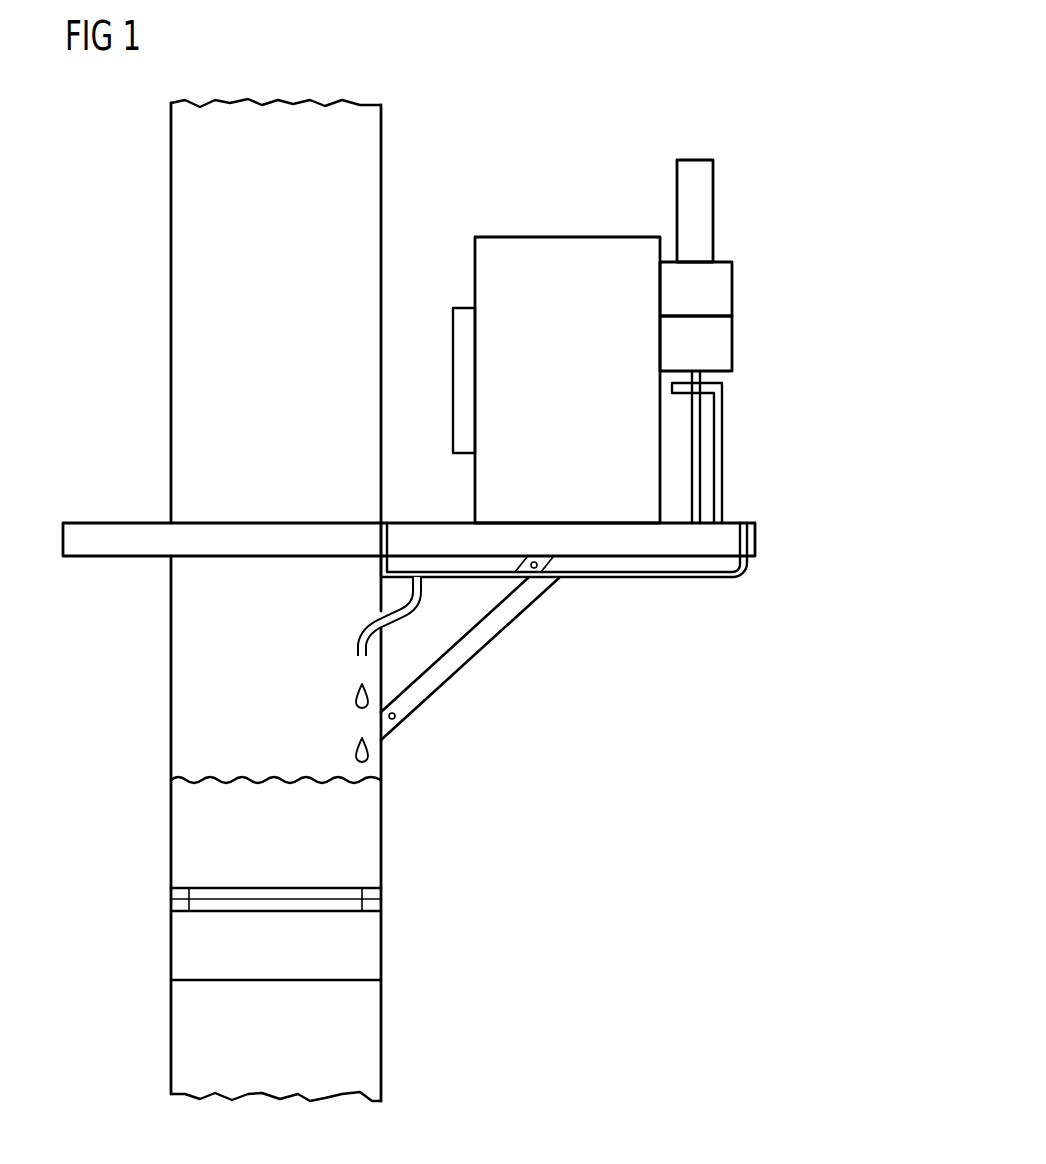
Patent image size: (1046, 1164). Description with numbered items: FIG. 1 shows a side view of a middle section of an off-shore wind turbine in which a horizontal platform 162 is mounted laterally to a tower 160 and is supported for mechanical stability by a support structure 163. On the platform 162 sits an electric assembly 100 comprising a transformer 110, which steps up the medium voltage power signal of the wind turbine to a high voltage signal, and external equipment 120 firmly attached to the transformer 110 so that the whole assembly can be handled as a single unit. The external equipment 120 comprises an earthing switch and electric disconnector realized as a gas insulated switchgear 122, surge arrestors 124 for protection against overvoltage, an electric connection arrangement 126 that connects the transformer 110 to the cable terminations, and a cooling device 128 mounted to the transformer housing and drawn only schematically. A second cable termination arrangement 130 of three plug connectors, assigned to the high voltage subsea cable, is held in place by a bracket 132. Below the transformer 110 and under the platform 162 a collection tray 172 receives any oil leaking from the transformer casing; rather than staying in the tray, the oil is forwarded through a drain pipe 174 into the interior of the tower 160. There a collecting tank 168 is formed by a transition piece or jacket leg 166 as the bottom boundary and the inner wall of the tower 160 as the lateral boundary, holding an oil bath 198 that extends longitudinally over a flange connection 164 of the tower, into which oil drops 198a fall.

The electric assembly 100 is at (782, 127).
The transformer 110 is at (567, 243).
The external equipment 120 is at (730, 144).
The gas insulated switchgear 122 is at (728, 291).
The surge arrestors 124 is at (706, 211).
The electric connection arrangement 126 is at (728, 345).
The cooling device 128 is at (463, 312).
The second cable termination arrangement 130 is at (696, 426).
The bracket 132 is at (722, 476).
The tower 160 is at (268, 140).
The platform 162 is at (125, 530).
The support structure 163 is at (463, 644).
The flange connection 164 is at (375, 894).
The jacket leg 166 is at (383, 1025).
The collecting tank 168 is at (160, 781).
The collection tray 172 is at (745, 572).
The drain pipe 174 is at (388, 614).
The oil bath 198 is at (380, 826).
The oil drops 198a is at (352, 700).